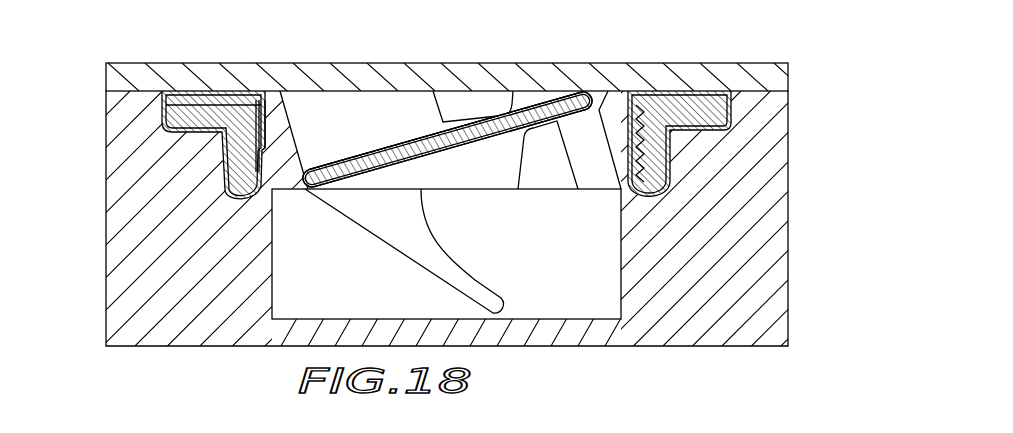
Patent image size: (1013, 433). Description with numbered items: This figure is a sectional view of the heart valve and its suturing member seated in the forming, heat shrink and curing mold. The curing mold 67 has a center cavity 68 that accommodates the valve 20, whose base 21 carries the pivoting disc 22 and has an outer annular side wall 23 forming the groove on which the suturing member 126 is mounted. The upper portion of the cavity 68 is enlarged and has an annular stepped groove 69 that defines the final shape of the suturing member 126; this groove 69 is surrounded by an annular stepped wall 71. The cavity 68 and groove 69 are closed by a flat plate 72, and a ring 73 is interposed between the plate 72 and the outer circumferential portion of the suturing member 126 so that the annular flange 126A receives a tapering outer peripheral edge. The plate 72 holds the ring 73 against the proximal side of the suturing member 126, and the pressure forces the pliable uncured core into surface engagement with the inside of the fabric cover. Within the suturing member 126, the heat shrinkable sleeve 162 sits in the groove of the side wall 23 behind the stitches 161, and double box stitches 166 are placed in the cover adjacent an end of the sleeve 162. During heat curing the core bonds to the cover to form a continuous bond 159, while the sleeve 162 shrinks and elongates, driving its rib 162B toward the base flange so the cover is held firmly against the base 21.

The valve 20 is at (523, 97).
The base 21 is at (347, 110).
The pivoting disc 22 is at (378, 149).
The outer annular side wall 23 is at (297, 147).
The curing mold 67 is at (745, 250).
The center cavity 68 is at (579, 253).
The annular stepped groove 69 is at (732, 125).
The annular stepped wall 71 is at (673, 163).
The flat plate 72 is at (760, 72).
The ring 73 is at (718, 92).
The suturing member 126 is at (190, 100).
The annular flange 126A is at (175, 133).
The bond 159 is at (232, 97).
The stitches 161 is at (265, 138).
The heat shrinkable sleeve 162 is at (270, 110).
The annular outwardly directed rib 162B is at (500, 0).
The double box stitches 166 is at (560, 0).